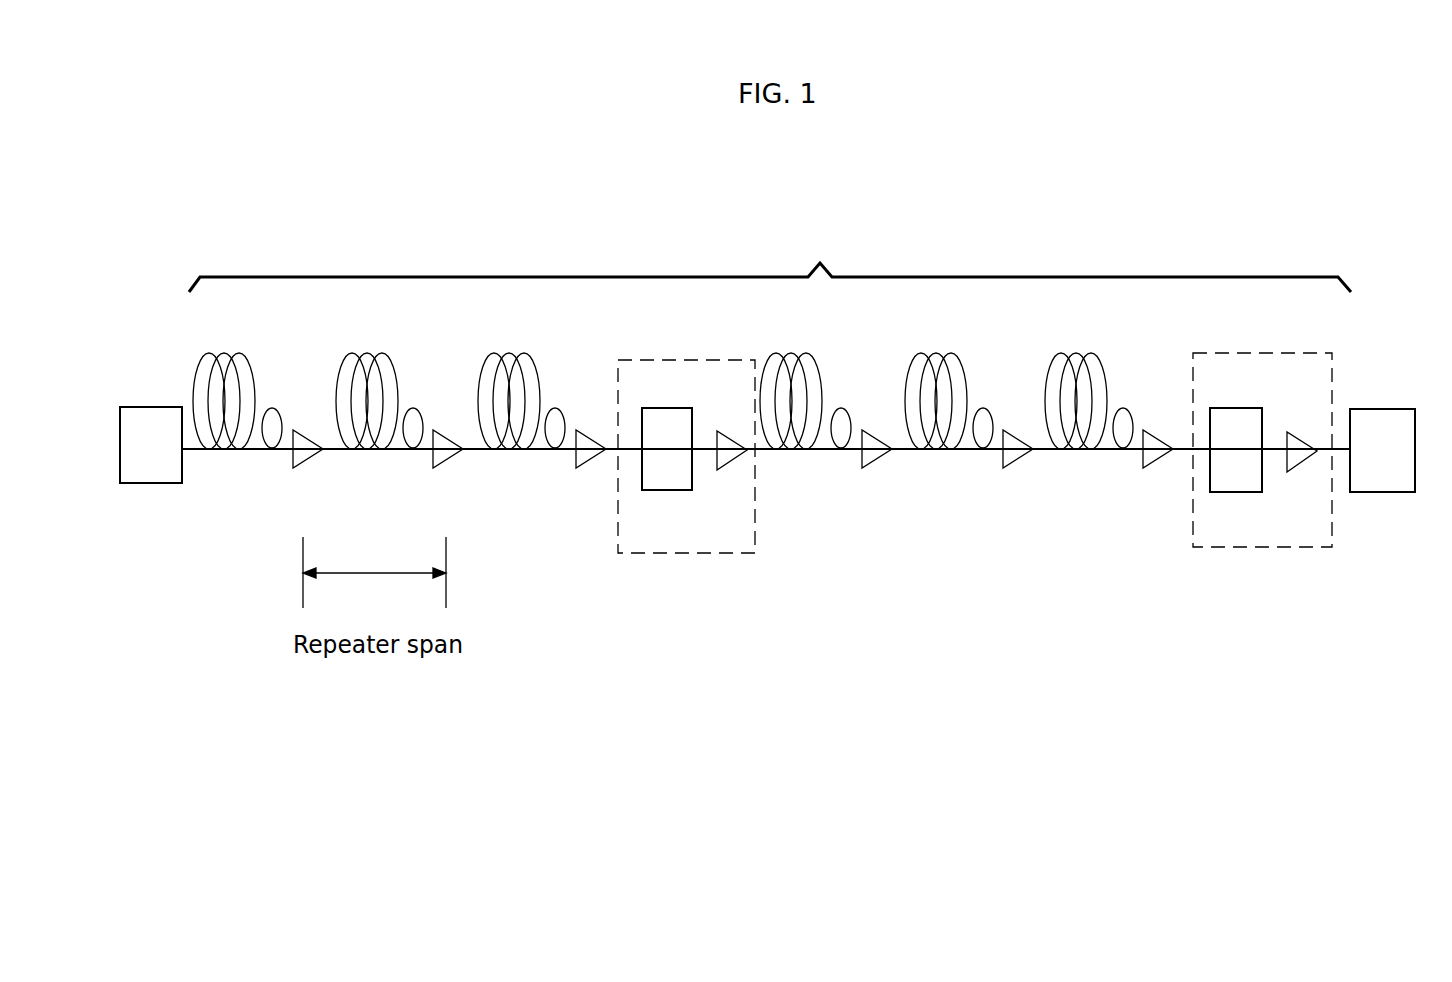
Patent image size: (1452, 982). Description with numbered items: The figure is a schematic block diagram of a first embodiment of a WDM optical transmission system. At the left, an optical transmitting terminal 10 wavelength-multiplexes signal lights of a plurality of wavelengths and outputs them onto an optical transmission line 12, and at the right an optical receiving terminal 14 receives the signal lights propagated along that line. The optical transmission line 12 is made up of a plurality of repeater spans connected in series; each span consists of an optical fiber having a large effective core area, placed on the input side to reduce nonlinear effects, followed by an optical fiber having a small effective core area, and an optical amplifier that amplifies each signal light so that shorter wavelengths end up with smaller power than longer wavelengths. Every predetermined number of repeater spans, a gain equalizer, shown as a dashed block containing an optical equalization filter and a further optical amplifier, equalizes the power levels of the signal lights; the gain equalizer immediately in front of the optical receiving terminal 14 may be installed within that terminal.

The optical transmitting terminal 10 is at (147, 483).
The optical transmission line 12 is at (770, 258).
The optical receiving terminal 14 is at (1384, 492).